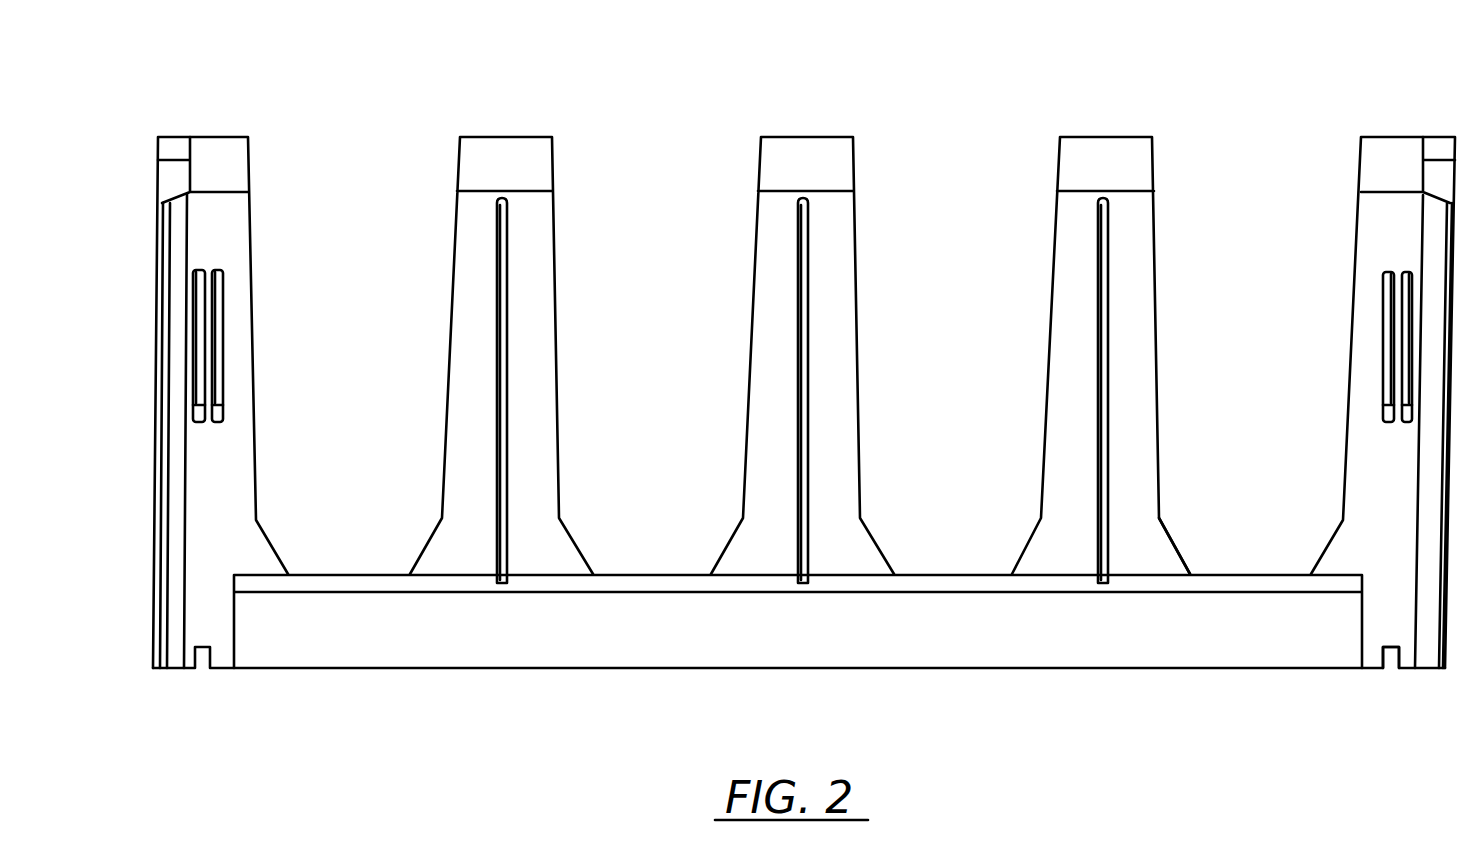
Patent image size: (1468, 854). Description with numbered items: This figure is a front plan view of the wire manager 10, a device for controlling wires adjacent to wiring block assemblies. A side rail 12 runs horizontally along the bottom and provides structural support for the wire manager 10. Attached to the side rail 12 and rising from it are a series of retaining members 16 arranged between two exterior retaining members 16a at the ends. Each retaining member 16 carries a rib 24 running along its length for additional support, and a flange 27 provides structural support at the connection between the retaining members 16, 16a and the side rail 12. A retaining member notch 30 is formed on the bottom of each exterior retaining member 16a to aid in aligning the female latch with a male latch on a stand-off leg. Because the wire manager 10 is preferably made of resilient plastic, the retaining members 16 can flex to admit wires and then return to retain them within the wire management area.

The wire manager 10 is at (622, 84).
The side rail 12 is at (1133, 655).
The retaining member 16 is at (1155, 365).
The exterior retaining member 16a is at (1366, 223).
The rib 24 is at (1098, 443).
The flange 27 is at (1184, 515).
The retaining member notch 30 is at (1397, 668).